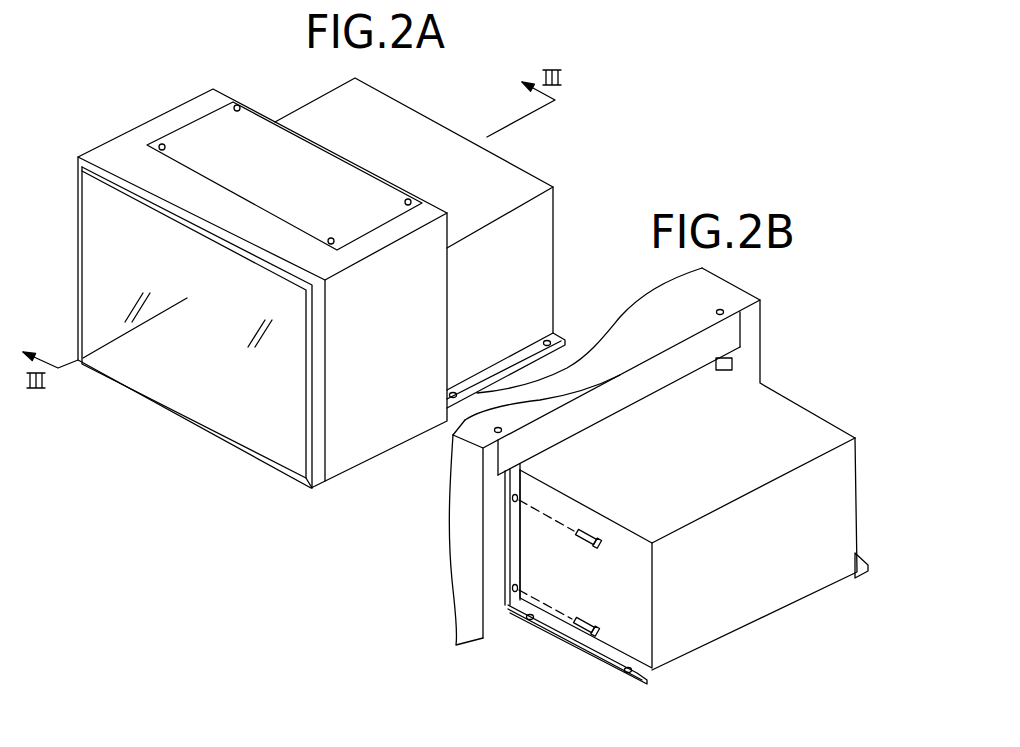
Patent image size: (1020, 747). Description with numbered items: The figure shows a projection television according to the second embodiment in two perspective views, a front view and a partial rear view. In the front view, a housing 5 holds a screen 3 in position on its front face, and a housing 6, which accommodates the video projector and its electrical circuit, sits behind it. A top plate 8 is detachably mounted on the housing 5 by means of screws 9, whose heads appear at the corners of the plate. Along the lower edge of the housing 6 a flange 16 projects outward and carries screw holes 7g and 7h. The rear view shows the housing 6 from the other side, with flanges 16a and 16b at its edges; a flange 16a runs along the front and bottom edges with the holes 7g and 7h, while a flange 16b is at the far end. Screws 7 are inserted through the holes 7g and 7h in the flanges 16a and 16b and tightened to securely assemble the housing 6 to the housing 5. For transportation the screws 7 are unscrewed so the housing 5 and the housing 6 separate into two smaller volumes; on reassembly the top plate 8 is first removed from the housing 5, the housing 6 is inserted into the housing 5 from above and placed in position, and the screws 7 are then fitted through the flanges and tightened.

In FIG. 2A, the housing 5 is at (138, 133).
In FIG. 2A, the screen 3 is at (193, 410).
In FIG. 2A, the top plate 8 is at (252, 115).
In FIG. 2A, the screws 9 is at (240, 105).
In FIG. 2A, the housing 6 is at (513, 162).
In FIG. 2B, the housing 6 is at (783, 410).
In FIG. 2A, the flange 16 is at (508, 358).
In FIG. 2A, the hole 7g is at (458, 386).
In FIG. 2B, the hole 7g is at (530, 627).
In FIG. 2A, the hole 7h is at (557, 337).
In FIG. 2B, the hole 7h is at (620, 675).
In FIG. 2B, the flange 16a is at (575, 640).
In FIG. 2B, the flange 16b is at (855, 553).
In FIG. 2B, the screws 7 is at (623, 617).